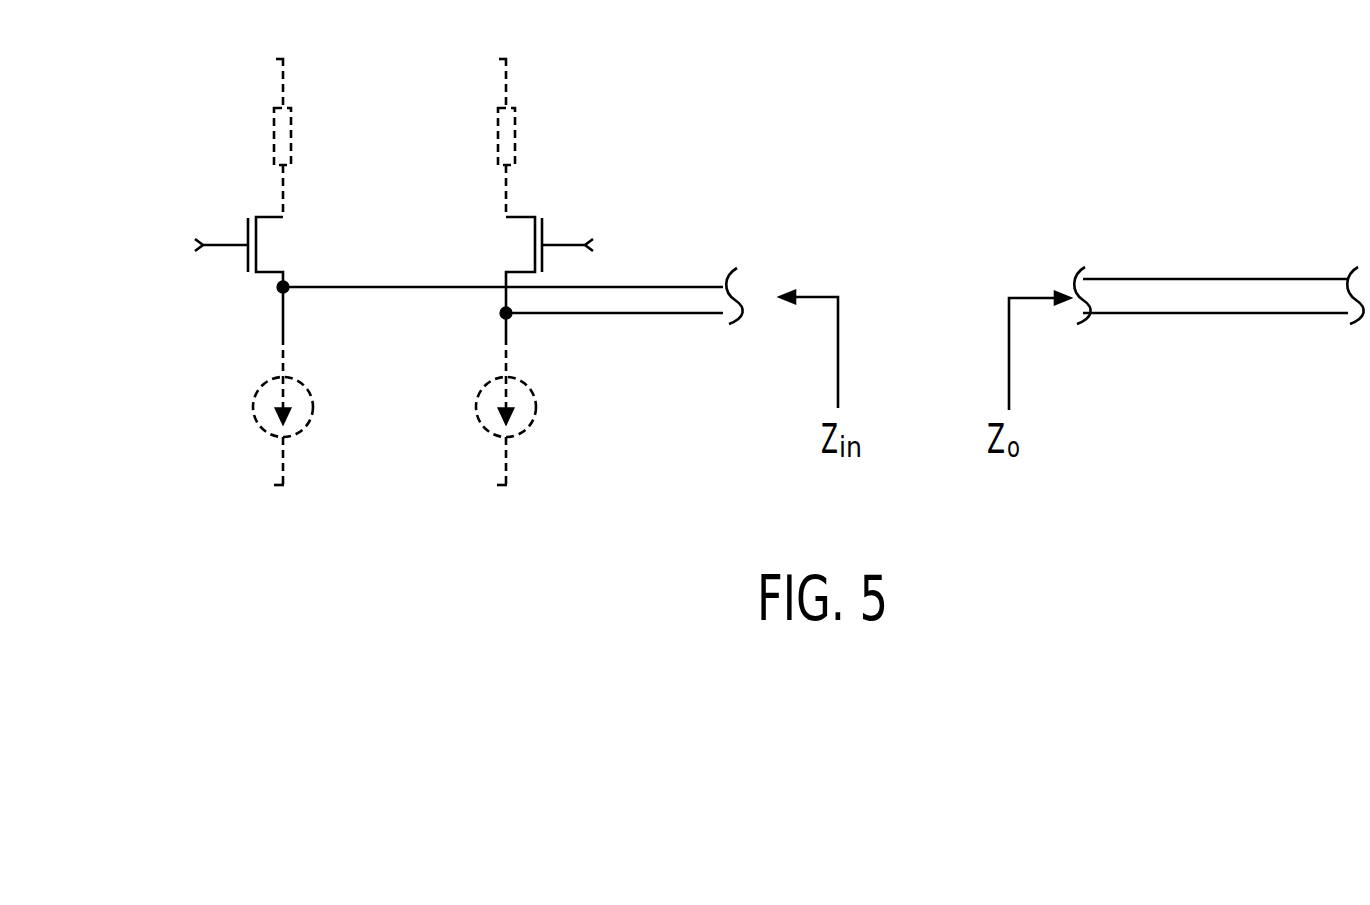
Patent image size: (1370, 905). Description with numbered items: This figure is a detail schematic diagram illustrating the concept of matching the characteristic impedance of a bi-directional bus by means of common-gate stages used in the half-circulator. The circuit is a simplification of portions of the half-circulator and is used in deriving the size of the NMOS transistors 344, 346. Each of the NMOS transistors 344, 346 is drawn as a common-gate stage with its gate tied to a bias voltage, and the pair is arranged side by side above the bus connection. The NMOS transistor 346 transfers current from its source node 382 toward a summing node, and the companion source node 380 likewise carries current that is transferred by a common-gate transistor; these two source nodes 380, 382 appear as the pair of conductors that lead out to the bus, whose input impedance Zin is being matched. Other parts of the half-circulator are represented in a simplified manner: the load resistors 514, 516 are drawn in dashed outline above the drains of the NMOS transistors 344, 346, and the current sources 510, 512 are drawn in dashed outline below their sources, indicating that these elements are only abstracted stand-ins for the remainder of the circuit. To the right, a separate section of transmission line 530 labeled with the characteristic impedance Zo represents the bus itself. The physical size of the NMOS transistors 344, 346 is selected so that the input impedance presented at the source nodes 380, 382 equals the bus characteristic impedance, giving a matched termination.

The NMOS transistor 344 is at (248, 222).
The NMOS transistor 346 is at (542, 222).
The source node 380 is at (677, 314).
The source node 382 is at (702, 287).
The current source 510 is at (254, 405).
The current source 512 is at (477, 405).
The resistor 514 is at (273, 123).
The resistor 516 is at (498, 123).
The output transmission line 530 is at (1225, 314).